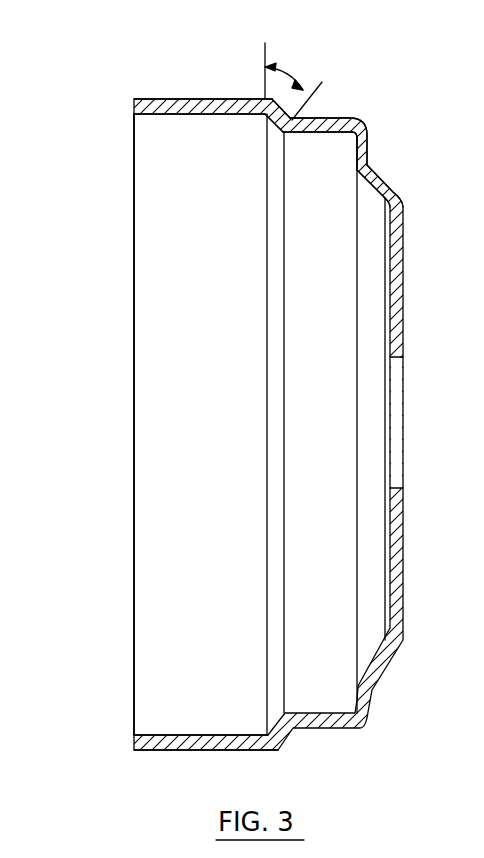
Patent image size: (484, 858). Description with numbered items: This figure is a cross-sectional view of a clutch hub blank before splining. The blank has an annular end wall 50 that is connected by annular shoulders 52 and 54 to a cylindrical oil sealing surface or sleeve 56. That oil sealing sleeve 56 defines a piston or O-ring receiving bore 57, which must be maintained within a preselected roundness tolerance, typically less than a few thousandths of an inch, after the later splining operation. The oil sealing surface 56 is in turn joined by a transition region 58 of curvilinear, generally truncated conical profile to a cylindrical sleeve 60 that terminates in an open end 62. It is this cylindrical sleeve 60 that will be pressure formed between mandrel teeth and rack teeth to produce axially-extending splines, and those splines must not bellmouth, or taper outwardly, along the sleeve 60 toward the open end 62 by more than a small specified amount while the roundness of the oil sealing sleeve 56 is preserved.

The annular end wall 50 is at (398, 288).
The annular shoulder 52 is at (397, 200).
The annular shoulder 54 is at (364, 142).
The oil sealing surface or sleeve 56 is at (350, 118).
The piston or O-ring receiving bore 57 is at (329, 131).
The transition region 58 is at (290, 76).
The cylindrical sleeve 60 is at (192, 99).
The open end 62 is at (136, 713).